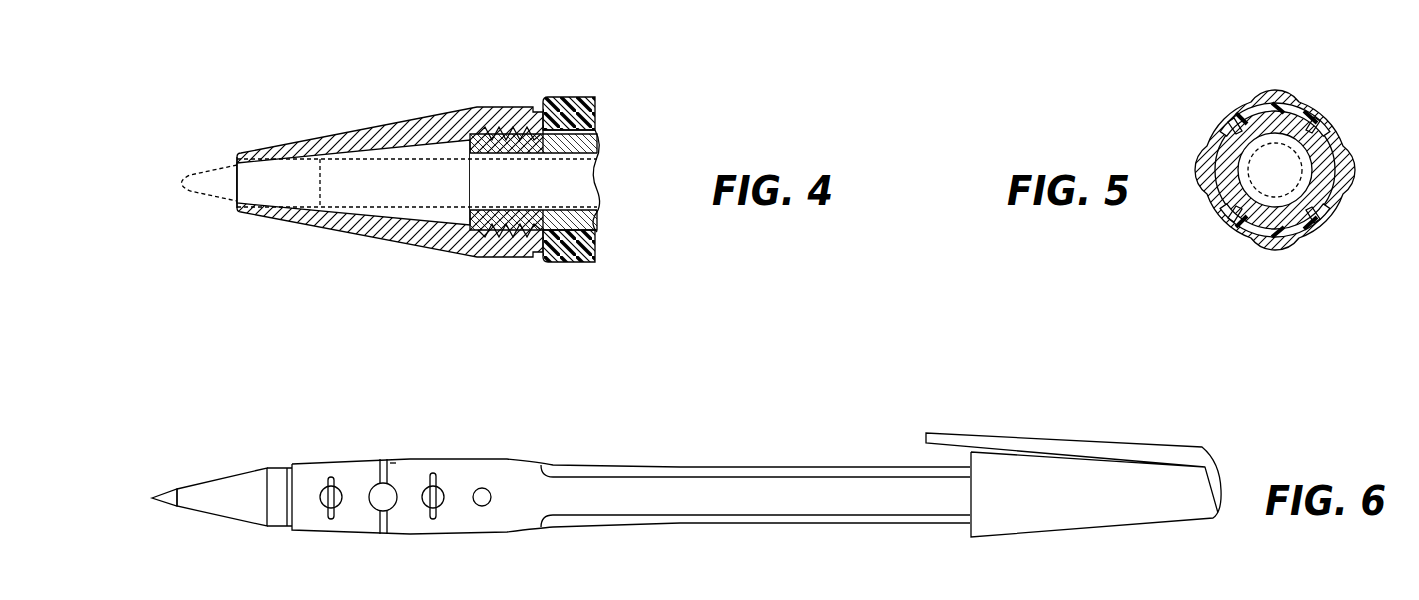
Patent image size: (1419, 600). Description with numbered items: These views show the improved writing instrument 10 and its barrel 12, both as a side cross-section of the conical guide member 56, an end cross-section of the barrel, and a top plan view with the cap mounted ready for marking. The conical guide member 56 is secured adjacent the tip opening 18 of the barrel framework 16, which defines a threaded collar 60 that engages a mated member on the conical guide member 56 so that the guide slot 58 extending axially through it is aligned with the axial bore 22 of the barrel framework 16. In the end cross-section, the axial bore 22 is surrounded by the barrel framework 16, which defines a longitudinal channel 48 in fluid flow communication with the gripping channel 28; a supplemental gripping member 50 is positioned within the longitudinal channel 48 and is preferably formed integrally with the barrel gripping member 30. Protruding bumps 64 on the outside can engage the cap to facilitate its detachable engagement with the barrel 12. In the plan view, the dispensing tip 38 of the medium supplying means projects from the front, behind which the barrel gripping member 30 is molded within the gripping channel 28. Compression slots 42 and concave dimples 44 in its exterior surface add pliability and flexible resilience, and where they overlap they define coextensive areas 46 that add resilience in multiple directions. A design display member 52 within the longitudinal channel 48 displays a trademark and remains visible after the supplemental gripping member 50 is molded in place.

In FIG. 4, the writing instrument 10 is at (567, 97).
In FIG. 6, the writing instrument 10 is at (505, 458).
In FIG. 6, the barrel 12 is at (540, 500).
In FIG. 4, the barrel framework 16 is at (587, 220).
In FIG. 5, the barrel framework 16 is at (1218, 158).
In FIG. 6, the barrel framework 16 is at (562, 468).
In FIG. 4, the tip opening 18 is at (543, 177).
In FIG. 4, the axial bore 22 is at (580, 177).
In FIG. 5, the axial bore 22 is at (1298, 162).
In FIG. 4, the gripping channel 28 is at (587, 127).
In FIG. 6, the barrel gripping member 30 is at (300, 487).
In FIG. 6, the dispensing tip 38 is at (163, 495).
In FIG. 6, the compression slots 42 is at (380, 462).
In FIG. 6, the concave dimples 44 is at (480, 490).
In FIG. 6, the coextensive areas 46 is at (437, 508).
In FIG. 5, the longitudinal channel 48 is at (1300, 110).
In FIG. 5, the supplemental gripping member 50 is at (1237, 112).
In FIG. 6, the design display member 52 is at (805, 487).
In FIG. 4, the conical guide member 56 is at (353, 227).
In FIG. 6, the conical guide member 56 is at (232, 483).
In FIG. 4, the guide slot 58 is at (363, 180).
In FIG. 4, the threaded collar 60 is at (513, 225).
In FIG. 5, the protruding bumps 64 is at (1280, 249).